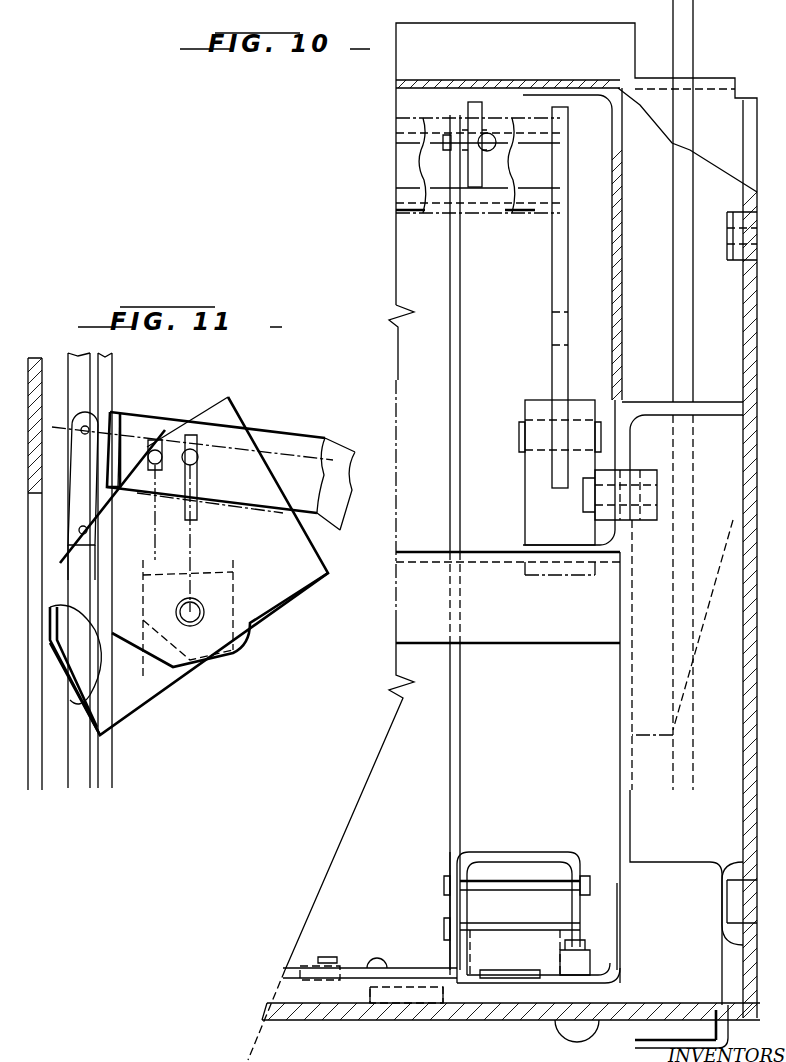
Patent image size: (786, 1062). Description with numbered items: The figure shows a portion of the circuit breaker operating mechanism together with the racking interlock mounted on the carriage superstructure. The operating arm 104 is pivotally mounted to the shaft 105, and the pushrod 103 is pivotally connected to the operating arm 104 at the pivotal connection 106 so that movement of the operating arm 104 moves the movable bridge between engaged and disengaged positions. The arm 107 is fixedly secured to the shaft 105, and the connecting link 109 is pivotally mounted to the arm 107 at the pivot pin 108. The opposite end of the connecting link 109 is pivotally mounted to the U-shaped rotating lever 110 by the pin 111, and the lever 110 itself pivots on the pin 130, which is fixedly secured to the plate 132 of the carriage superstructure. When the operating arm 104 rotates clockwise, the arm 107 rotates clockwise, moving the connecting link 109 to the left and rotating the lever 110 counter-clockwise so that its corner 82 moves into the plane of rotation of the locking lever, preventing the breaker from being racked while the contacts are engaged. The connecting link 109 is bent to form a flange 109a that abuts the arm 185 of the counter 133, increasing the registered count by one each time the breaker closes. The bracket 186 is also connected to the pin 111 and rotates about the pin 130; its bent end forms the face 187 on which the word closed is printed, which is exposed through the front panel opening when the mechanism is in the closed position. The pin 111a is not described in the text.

In FIG. 11, the corner 82 is at (75, 590).
In FIG. 10, the pushrod 103 is at (525, 480).
In FIG. 10, the operating arm 104 is at (550, 365).
In FIG. 10, the shaft 105 is at (423, 120).
In FIG. 10, the pivotal connection 106 is at (521, 430).
In FIG. 10, the arm 107 is at (470, 185).
In FIG. 10, the pivot pin 108 is at (490, 135).
In FIG. 10, the connecting link 109 is at (460, 312).
In FIG. 11, the connecting link 109 is at (272, 432).
In FIG. 10, the flange 109a is at (470, 975).
In FIG. 11, the flange 109a is at (115, 410).
In FIG. 10, the U-shaped rotating lever 110 is at (537, 850).
In FIG. 11, the U-shaped rotating lever 110 is at (278, 600).
In FIG. 10, the pin 111 is at (445, 885).
In FIG. 11, the pin 111 is at (285, 468).
In FIG. 11, the pin 111a is at (193, 467).
In FIG. 10, the pin 130 is at (443, 925).
In FIG. 11, the pin 130 is at (182, 608).
In FIG. 10, the plate 132 is at (617, 880).
In FIG. 11, the counter 133 is at (70, 523).
In FIG. 11, the arm 185 is at (82, 447).
In FIG. 10, the bracket 186 is at (446, 865).
In FIG. 10, the face 187 is at (407, 995).